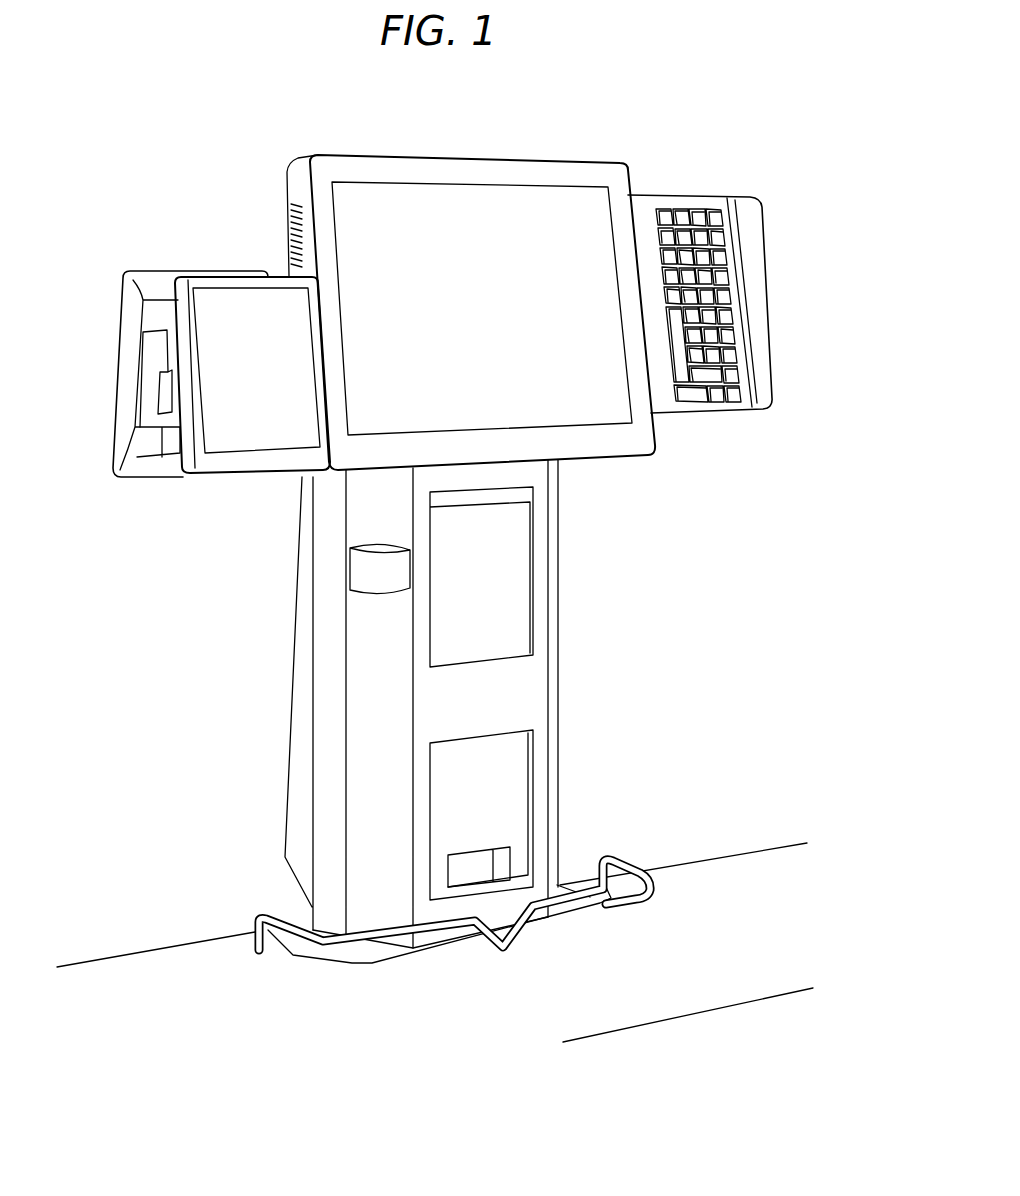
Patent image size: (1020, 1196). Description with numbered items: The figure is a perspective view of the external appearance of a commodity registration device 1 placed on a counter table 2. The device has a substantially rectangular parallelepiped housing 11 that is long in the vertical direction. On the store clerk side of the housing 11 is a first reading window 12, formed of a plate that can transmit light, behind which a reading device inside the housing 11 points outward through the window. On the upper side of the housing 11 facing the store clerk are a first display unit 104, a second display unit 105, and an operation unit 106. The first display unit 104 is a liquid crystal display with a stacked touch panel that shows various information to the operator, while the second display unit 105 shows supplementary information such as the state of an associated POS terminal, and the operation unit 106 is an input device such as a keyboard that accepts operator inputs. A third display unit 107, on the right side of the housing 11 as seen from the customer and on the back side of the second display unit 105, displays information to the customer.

The commodity registration device 1 is at (524, 114).
The counter table 2 is at (693, 883).
The housing 11 is at (429, 711).
The first reading window 12 is at (497, 582).
The first display unit 104 is at (422, 205).
The second display unit 105 is at (242, 305).
The operation unit 106 is at (688, 237).
The third display unit 107 is at (147, 282).